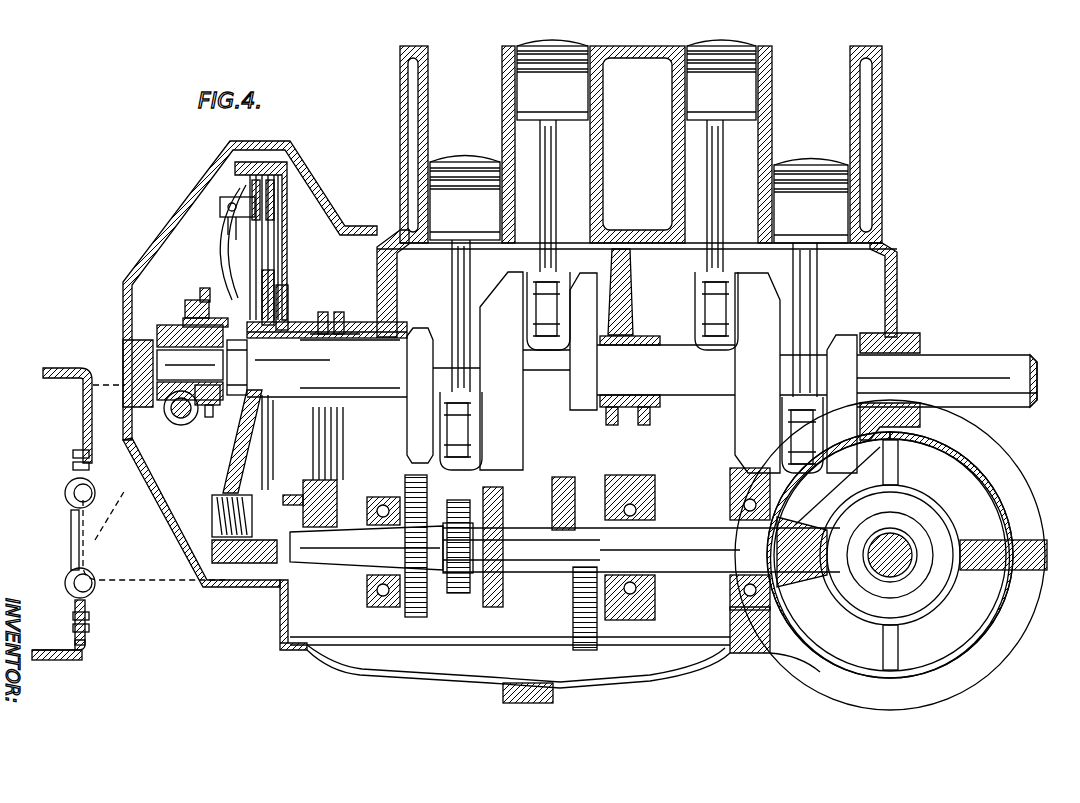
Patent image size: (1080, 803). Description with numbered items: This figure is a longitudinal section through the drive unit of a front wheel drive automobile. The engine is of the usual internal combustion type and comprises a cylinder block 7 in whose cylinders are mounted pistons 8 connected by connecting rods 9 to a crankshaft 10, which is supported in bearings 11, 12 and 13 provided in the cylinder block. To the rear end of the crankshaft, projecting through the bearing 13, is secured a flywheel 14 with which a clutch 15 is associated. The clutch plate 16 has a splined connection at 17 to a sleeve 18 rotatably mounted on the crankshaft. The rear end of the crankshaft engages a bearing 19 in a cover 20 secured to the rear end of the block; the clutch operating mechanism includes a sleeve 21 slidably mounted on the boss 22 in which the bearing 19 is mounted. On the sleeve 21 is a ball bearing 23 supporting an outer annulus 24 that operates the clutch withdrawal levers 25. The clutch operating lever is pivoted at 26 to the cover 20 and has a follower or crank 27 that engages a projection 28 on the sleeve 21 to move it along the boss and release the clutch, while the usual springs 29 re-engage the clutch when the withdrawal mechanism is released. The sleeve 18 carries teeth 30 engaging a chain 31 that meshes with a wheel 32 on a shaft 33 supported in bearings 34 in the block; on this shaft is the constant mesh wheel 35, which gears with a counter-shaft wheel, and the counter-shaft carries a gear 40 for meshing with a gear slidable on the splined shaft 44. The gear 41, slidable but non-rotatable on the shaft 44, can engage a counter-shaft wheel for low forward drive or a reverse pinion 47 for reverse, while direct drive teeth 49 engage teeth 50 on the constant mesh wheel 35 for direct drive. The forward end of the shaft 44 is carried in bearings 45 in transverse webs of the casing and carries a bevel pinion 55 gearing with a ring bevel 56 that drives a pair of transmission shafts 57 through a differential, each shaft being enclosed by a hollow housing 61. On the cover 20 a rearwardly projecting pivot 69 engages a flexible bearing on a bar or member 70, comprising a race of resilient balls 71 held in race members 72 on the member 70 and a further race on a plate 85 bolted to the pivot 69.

The cylinder block 7 is at (400, 143).
The pistons 8 is at (639, 141).
The connecting rods 9 is at (550, 195).
The crankshaft 10 is at (676, 392).
The bearing 11 is at (878, 333).
The bearing 12 is at (630, 380).
The bearing 13 is at (390, 330).
The flywheel 14 is at (240, 268).
The clutch 15 is at (287, 217).
The clutch plate 16 is at (277, 287).
The splined connection 17 is at (276, 312).
The sleeve 18 is at (270, 415).
The bearing 19 is at (160, 332).
The cover 20 is at (165, 237).
The sleeve 21 is at (187, 415).
The boss 22 is at (153, 342).
The ball bearing 23 is at (203, 298).
The outer annulus 24 is at (190, 308).
The clutch withdrawal levers 25 is at (218, 237).
The pivot 26 is at (165, 425).
The follower or crank 27 is at (90, 390).
The projection 28 is at (185, 322).
The springs 29 is at (212, 503).
The teeth 30 is at (330, 316).
The chain 31 is at (345, 440).
The wheel 32 is at (337, 484).
The shaft 33 is at (383, 566).
The bearings 34 is at (330, 525).
The constant mesh wheel 35 is at (428, 600).
The gear 40 is at (500, 502).
The gear 41 is at (562, 480).
The splined shaft 44 is at (641, 550).
The bearings 45 is at (730, 500).
The reverse pinion 47 is at (578, 645).
The direct drive teeth 49 is at (450, 502).
The teeth 50 is at (455, 583).
The bevel pinion 55 is at (797, 532).
The ring bevel 56 is at (918, 658).
The transmission shafts 57 is at (905, 543).
The hollow housing 61 is at (1005, 486).
The pivot 69 is at (96, 549).
The bar or member 70 is at (52, 652).
The balls 71 is at (75, 493).
The race members 72 is at (70, 485).
The plate 85 is at (71, 535).